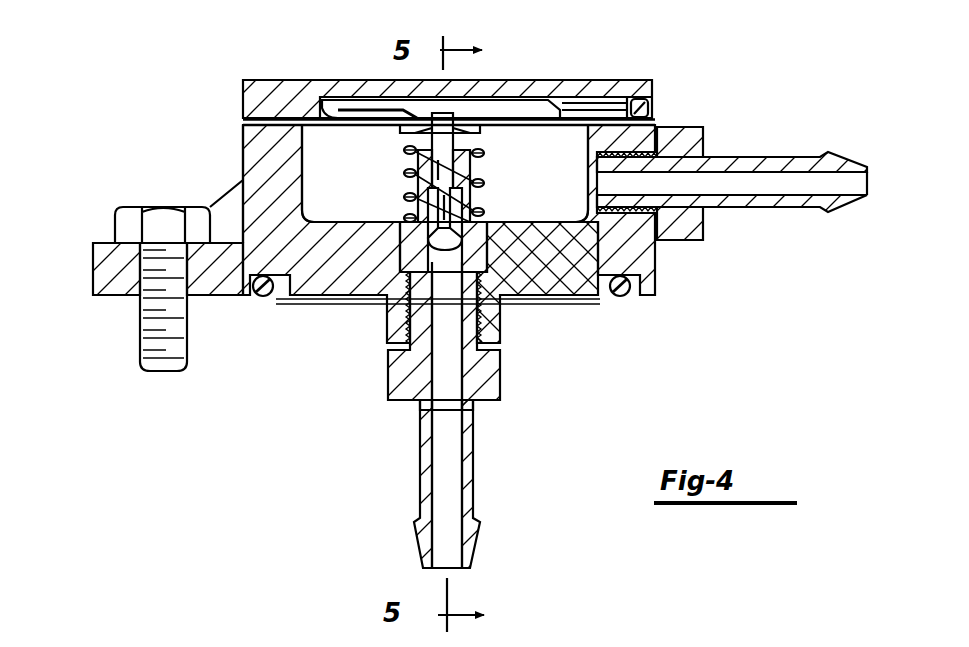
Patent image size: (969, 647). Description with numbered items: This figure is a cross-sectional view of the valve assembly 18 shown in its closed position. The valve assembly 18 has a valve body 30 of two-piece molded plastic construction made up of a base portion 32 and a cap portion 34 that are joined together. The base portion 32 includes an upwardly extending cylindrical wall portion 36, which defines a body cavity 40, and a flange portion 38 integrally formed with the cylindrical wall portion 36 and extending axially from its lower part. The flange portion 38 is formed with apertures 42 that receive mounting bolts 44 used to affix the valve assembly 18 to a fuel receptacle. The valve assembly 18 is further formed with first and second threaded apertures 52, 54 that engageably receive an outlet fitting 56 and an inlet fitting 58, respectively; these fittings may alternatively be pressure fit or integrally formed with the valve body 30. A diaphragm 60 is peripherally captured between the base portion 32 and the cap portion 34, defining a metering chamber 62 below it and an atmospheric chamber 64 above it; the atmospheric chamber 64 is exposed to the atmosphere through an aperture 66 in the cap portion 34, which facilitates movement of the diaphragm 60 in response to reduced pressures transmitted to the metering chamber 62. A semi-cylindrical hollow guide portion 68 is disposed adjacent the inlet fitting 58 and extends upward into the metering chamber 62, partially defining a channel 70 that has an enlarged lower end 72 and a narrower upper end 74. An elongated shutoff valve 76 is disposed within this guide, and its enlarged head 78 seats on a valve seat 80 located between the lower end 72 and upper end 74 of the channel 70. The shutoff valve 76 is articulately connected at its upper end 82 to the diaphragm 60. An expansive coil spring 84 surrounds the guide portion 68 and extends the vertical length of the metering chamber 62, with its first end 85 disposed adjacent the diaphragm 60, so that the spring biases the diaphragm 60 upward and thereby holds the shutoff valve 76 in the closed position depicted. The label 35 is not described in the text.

The valve assembly 18 is at (150, 90).
The valve body 30 is at (257, 153).
The base portion 32 is at (93, 267).
The cap portion 34 is at (603, 85).
The cap bottom edge 35 is at (242, 122).
The cylindrical wall portion 36 is at (243, 182).
The flange portion 38 is at (113, 248).
The body cavity 40 is at (330, 160).
The apertures 42 is at (142, 300).
The mounting bolts 44 is at (188, 362).
The first threaded aperture 52 is at (660, 262).
The second threaded aperture 54 is at (473, 357).
The outlet fitting 56 is at (753, 163).
The inlet fitting 58 is at (474, 492).
The diaphragm 60 is at (583, 78).
The metering chamber 62 is at (645, 108).
The atmospheric chamber 64 is at (357, 105).
The aperture 66 is at (645, 120).
The guide portion 68 is at (607, 305).
The channel 70 is at (572, 303).
The enlarged lower end 72 is at (395, 402).
The narrower upper end 74 is at (418, 205).
The shutoff valve 76 is at (455, 118).
The enlarged head 78 is at (466, 240).
The valve seat 80 is at (422, 262).
The upper end 82 is at (430, 110).
The coil spring 84 is at (331, 298).
The first end 85 is at (482, 126).